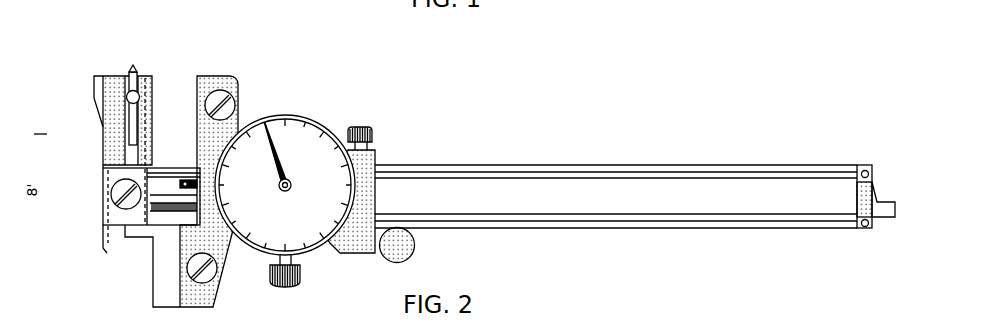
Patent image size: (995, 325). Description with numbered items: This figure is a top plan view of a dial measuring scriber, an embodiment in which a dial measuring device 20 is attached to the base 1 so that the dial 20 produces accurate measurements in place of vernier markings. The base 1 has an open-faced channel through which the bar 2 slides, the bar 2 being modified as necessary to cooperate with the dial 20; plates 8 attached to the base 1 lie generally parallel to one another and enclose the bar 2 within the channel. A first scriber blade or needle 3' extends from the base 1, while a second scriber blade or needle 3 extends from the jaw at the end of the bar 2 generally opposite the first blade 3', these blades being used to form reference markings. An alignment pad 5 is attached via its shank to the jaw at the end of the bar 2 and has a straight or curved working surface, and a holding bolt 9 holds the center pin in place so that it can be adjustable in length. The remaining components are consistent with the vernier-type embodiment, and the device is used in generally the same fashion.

The base 1 is at (372, 179).
The bar 2 is at (635, 168).
The scriber blade or needle 3 is at (146, 194).
The first scriber blade or needle 3' is at (225, 171).
The alignment pad 5 is at (99, 131).
The plates 8 is at (133, 64).
The holding bolt 9 is at (161, 82).
The dial measuring device 20 is at (313, 171).